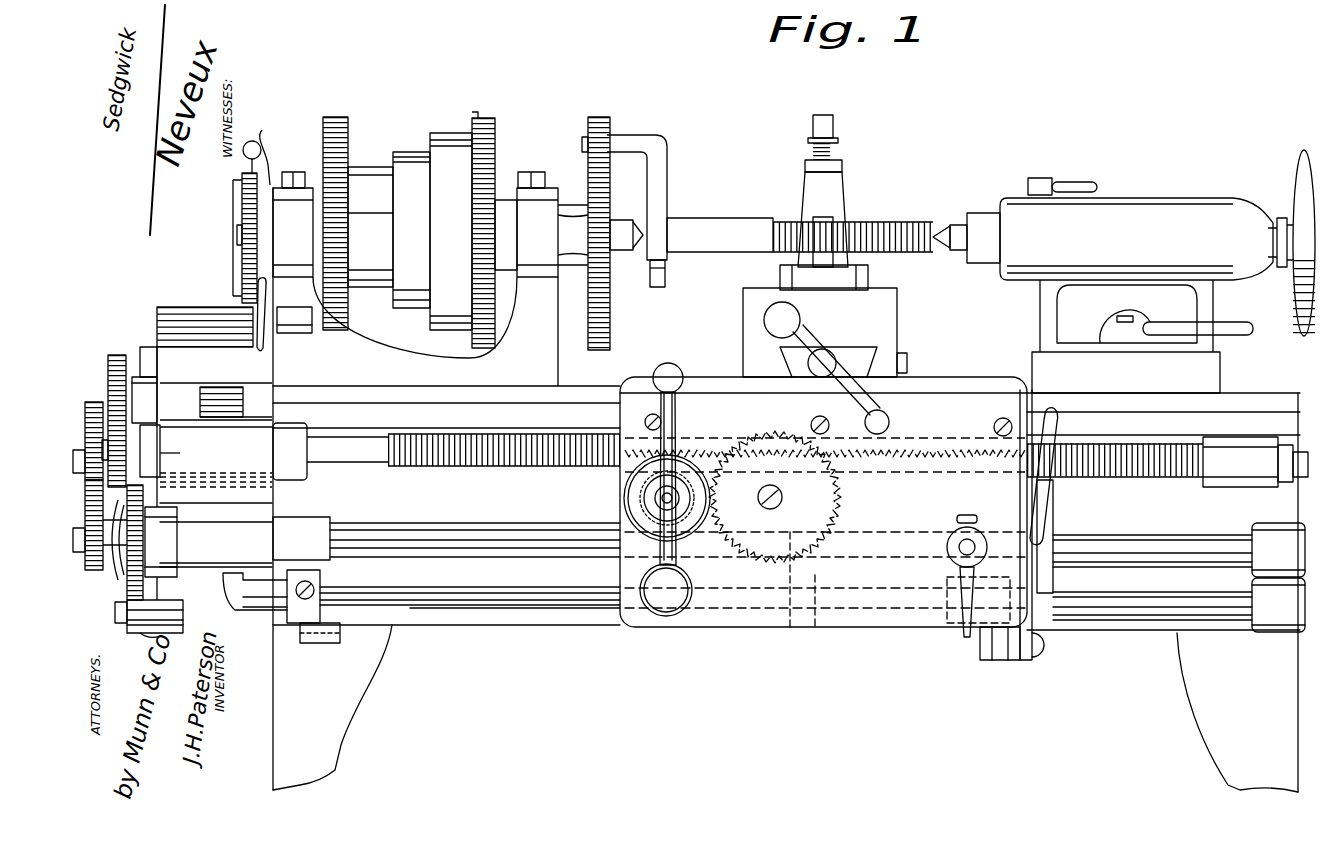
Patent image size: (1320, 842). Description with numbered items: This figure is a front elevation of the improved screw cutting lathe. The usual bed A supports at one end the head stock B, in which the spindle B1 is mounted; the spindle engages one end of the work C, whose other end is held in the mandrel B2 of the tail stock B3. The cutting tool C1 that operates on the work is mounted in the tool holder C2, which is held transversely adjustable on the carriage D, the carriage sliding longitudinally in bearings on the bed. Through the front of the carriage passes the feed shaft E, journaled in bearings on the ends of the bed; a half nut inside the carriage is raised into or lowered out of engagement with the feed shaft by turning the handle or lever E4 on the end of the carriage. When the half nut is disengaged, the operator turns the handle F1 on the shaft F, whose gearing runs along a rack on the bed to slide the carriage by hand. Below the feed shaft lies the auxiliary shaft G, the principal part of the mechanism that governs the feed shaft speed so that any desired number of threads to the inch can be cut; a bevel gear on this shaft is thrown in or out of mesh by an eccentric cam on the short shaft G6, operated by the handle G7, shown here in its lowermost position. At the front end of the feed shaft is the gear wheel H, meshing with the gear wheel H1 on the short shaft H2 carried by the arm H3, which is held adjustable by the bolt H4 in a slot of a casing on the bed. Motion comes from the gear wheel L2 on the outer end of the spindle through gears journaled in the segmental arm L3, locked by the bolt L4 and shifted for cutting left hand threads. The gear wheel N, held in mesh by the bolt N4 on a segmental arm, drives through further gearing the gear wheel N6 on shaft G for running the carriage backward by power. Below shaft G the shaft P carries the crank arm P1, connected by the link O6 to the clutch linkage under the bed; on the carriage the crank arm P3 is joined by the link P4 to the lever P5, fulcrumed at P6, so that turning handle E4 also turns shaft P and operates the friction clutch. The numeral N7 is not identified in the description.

The bed A is at (597, 408).
The head stock B is at (441, 249).
The spindle B1 is at (622, 230).
The mandrel B2 is at (950, 233).
The tail stock B3 is at (1185, 215).
The work C is at (720, 235).
The cutting tool C1 is at (813, 247).
The tool holder C2 is at (885, 312).
The carriage D is at (823, 502).
The feed shaft E is at (1185, 488).
The handle or lever E4 is at (1040, 505).
The shaft F is at (655, 498).
The handle F1 is at (672, 420).
The auxiliary shaft G is at (507, 545).
The short shaft G6 is at (962, 545).
The handle G7 is at (950, 580).
The gear wheel H is at (160, 453).
The gear wheel H1 is at (108, 372).
The short shaft H2 is at (100, 408).
The arm H3 is at (158, 338).
The bolt H4 is at (140, 378).
The gear wheel L2 is at (240, 210).
The segmental arm L3 is at (270, 345).
The bolt L4 is at (262, 310).
The gear wheel N is at (88, 498).
The bolt N4 is at (115, 618).
The gear wheel N6 is at (147, 540).
The bracket foot N7 is at (140, 636).
The link O6 is at (340, 640).
The shaft P is at (500, 607).
The crank arm P1 is at (305, 643).
The crank arm P3 is at (990, 660).
The link P4 is at (1030, 662).
The lever P5 is at (1045, 637).
The fulcrum P6 is at (1054, 573).